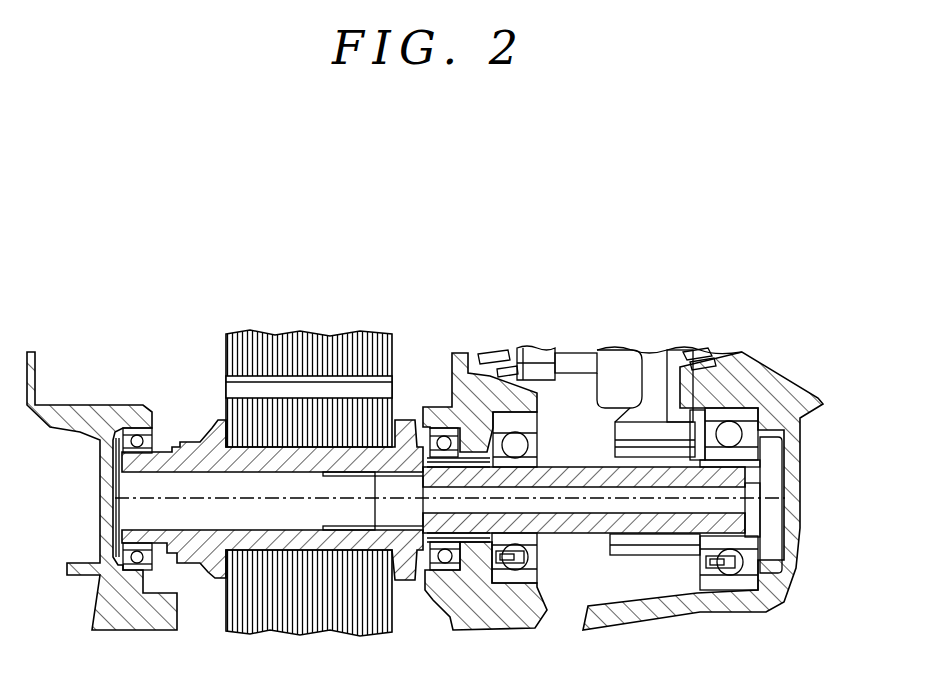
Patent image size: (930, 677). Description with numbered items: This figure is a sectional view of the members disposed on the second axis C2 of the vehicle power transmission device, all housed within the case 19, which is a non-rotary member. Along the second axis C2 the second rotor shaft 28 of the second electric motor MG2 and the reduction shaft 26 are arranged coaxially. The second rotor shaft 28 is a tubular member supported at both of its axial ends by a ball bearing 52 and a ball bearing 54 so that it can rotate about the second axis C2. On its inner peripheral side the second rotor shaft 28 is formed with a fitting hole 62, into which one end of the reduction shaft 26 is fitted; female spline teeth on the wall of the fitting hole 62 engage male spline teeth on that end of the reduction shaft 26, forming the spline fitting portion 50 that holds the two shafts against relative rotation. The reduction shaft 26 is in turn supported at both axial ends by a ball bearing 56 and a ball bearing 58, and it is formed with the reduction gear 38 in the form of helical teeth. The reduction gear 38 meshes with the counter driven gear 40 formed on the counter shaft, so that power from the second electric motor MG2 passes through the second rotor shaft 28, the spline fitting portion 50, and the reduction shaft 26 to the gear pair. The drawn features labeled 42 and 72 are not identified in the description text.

The case 19 is at (783, 393).
The reduction shaft 26 is at (565, 467).
The second rotor shaft 28 is at (212, 447).
The reduction gear 38 is at (660, 553).
The counter driven gear 40 is at (637, 427).
The clutch 42 is at (540, 356).
The spline fitting portion 50 is at (413, 450).
The ball bearing 52 is at (138, 438).
The ball bearing 54 is at (432, 558).
The ball bearing 56 is at (517, 563).
The ball bearing 58 is at (729, 430).
The fitting hole 62 is at (347, 482).
The partition wall 72 is at (478, 590).
The second axis C2 is at (153, 498).
The second electric motor MG2 is at (258, 318).